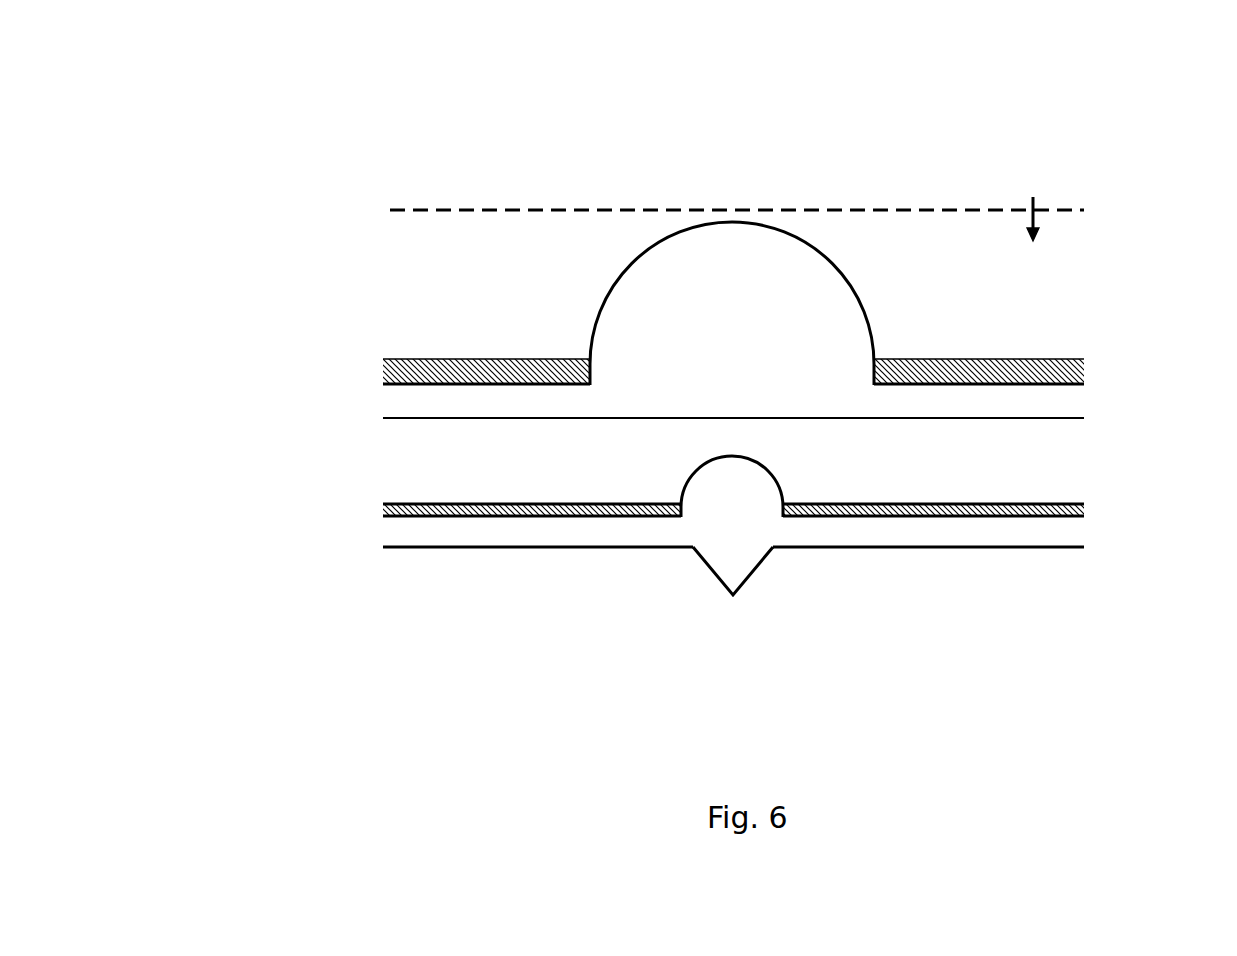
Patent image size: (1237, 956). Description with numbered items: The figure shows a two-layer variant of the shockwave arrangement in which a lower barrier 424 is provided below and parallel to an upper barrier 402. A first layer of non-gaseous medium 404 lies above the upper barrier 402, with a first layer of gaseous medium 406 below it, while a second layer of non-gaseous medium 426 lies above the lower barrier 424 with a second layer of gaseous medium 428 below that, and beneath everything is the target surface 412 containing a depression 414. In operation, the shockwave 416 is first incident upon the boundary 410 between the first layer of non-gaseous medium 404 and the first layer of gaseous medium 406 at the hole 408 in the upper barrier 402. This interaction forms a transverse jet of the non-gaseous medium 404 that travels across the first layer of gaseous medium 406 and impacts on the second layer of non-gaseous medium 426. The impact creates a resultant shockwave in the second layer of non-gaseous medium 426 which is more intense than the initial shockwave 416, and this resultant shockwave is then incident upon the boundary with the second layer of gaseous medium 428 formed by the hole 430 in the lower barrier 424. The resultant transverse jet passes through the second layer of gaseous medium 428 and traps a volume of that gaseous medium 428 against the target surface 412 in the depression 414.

The upper barrier 402 is at (450, 366).
The first layer of non-gaseous medium 404 is at (503, 278).
The layer of gaseous medium 406 is at (520, 400).
The hole 408 is at (733, 373).
The boundary 410 is at (858, 293).
The target surface 412 is at (958, 588).
The depression 414 is at (752, 570).
The shockwave 416 is at (940, 210).
The lower barrier 424 is at (457, 508).
The second layer of non-gaseous medium 426 is at (955, 461).
The layer of gaseous medium 428 is at (468, 532).
The hole 430 is at (733, 513).